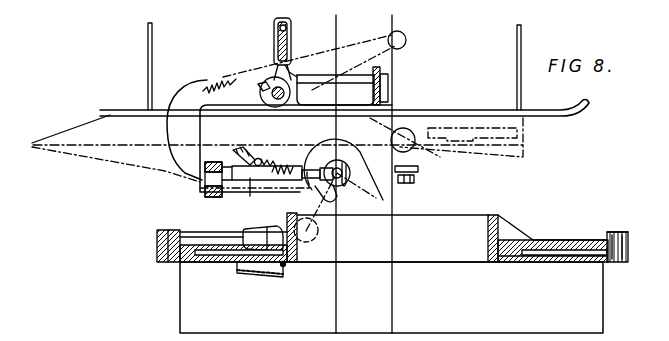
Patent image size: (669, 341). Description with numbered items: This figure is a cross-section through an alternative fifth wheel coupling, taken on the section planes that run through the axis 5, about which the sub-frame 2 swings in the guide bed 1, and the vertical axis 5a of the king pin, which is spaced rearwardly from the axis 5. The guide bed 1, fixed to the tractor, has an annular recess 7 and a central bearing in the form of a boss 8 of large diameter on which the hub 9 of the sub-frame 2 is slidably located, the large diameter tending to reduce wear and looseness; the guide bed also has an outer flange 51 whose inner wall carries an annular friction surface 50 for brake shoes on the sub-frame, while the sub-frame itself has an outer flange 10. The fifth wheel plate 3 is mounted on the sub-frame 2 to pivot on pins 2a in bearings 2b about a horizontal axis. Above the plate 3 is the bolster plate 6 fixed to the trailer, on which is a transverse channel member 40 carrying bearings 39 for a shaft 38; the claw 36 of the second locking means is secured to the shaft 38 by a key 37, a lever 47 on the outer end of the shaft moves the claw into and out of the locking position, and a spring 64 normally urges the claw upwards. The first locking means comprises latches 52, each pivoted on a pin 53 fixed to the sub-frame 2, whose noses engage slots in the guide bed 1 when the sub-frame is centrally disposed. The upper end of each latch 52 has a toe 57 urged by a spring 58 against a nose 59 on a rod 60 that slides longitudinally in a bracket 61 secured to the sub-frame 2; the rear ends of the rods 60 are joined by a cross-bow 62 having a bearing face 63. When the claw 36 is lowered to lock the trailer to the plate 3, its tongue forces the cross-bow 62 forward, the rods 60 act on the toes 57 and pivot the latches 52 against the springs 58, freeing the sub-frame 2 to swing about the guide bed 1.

The guide bed 1 is at (602, 263).
The sub-frame 2 is at (538, 248).
The pins 2a is at (372, 122).
The bearings 2b is at (386, 168).
The fifth wheel plate 3 is at (112, 145).
The axis 5 is at (393, 283).
The vertical axis of the king pin 5a is at (336, 283).
The bolster plate 6 is at (450, 112).
The annular recess 7 is at (537, 262).
The boss 8 is at (488, 232).
The hub 9 is at (500, 234).
The outer flange 10 is at (593, 261).
The claw 36 is at (183, 110).
The key 37 is at (262, 82).
The shaft 38 is at (284, 83).
The bearings 39 is at (317, 87).
The channel member 40 is at (290, 42).
The lever 47 is at (389, 78).
The annular friction surface 50 is at (613, 237).
The outer flange 51 is at (609, 256).
The latch 52 is at (272, 224).
The pin 53 is at (300, 226).
The toe 57 is at (356, 190).
The spring 58 is at (318, 190).
The nose 59 is at (323, 168).
The rod 60 is at (307, 165).
The bracket 61 is at (280, 170).
The cross-bow 62 is at (204, 183).
The bearing face 63 is at (204, 195).
The springs 64 is at (225, 75).